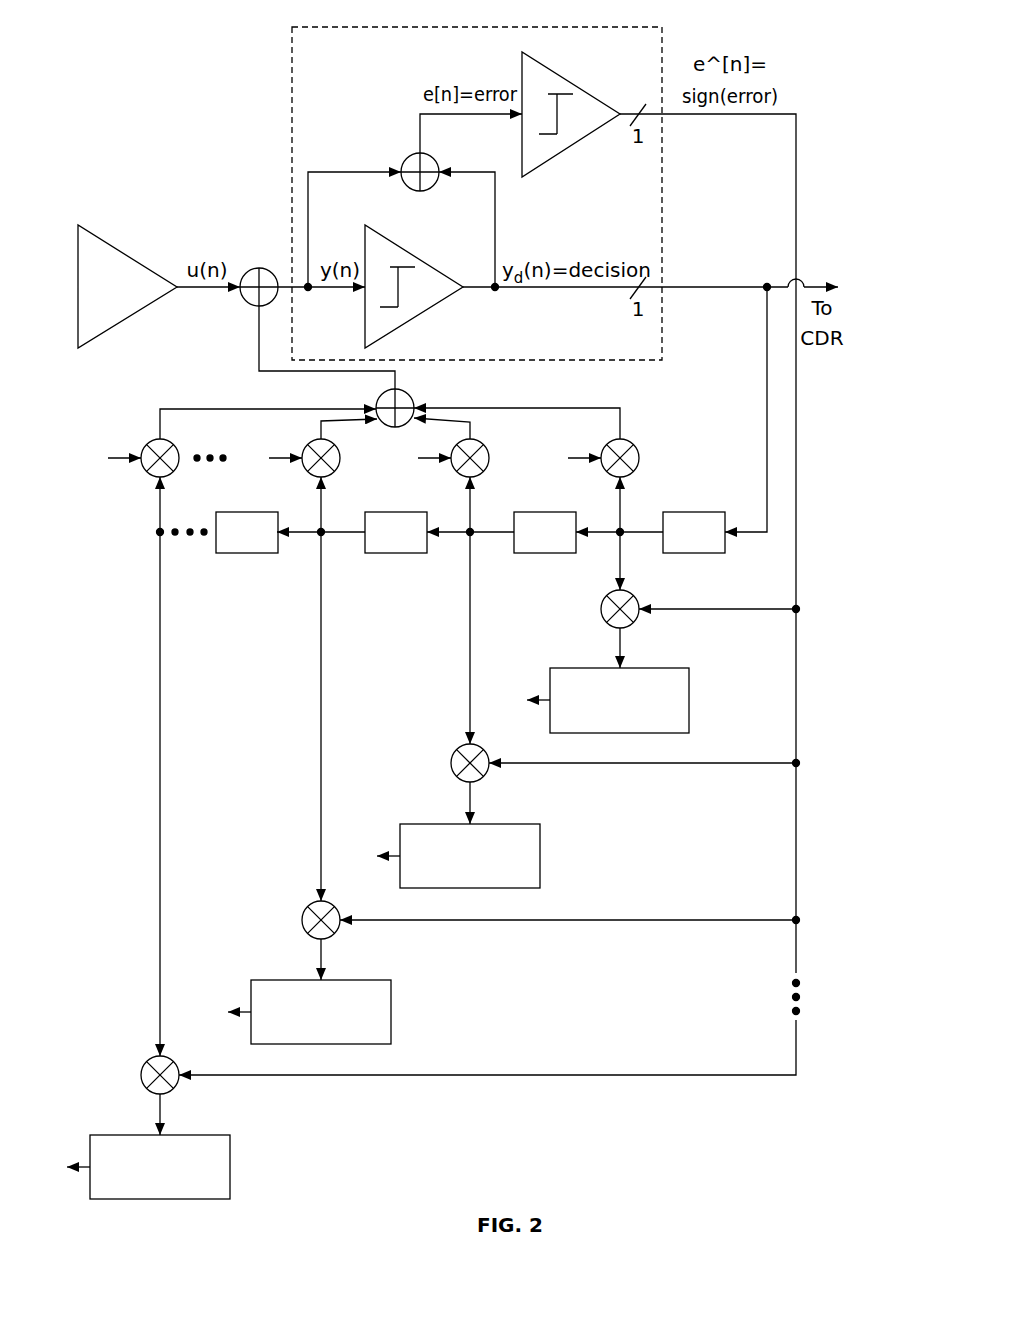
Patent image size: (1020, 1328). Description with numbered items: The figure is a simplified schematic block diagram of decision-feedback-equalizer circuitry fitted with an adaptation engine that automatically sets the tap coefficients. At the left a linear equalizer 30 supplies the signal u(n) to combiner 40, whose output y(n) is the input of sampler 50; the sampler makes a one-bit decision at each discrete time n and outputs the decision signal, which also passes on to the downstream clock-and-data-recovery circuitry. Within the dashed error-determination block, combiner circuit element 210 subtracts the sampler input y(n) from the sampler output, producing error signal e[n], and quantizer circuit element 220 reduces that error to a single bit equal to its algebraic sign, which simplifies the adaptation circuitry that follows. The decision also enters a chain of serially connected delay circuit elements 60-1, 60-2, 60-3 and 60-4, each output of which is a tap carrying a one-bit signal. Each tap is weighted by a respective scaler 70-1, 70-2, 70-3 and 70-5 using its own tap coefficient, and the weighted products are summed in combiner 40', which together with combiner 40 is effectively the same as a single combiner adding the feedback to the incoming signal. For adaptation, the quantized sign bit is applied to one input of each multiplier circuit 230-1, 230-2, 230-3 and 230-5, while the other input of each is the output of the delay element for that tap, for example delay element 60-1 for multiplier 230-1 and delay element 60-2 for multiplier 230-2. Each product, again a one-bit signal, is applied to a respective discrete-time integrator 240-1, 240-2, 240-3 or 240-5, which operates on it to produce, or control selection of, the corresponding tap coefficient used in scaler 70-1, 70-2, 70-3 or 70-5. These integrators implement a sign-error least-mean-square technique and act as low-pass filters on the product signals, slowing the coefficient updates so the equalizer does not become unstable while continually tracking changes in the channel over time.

The linear equalizer 30 is at (128, 252).
The combiner 40 is at (259, 261).
The sampler 50 is at (414, 251).
The combiner circuit element 210 is at (406, 160).
The quantizer circuit element 220 is at (571, 82).
The combiner 40' is at (418, 396).
The multiplier circuit element 70-1 is at (634, 444).
The multiplier circuit element 70-2 is at (484, 444).
The scaler 70-3 is at (309, 443).
The scaler 70-5 is at (148, 443).
The delay circuit element 60-1 is at (698, 553).
The delay circuit element 60-2 is at (549, 553).
The delay circuit element 60-3 is at (400, 553).
The delay circuit element 60-4 is at (250, 553).
The multiplier circuit 230-1 is at (602, 613).
The multiplier circuit 230-2 is at (457, 750).
The multiplier circuit 230-3 is at (307, 906).
The multiplier circuit 230-5 is at (146, 1061).
The discrete-time integrator 240-1 is at (689, 701).
The discrete-time integrator 240-2 is at (540, 857).
The discrete-time integrator 240-3 is at (391, 1013).
The discrete-time integrator 240-5 is at (230, 1168).